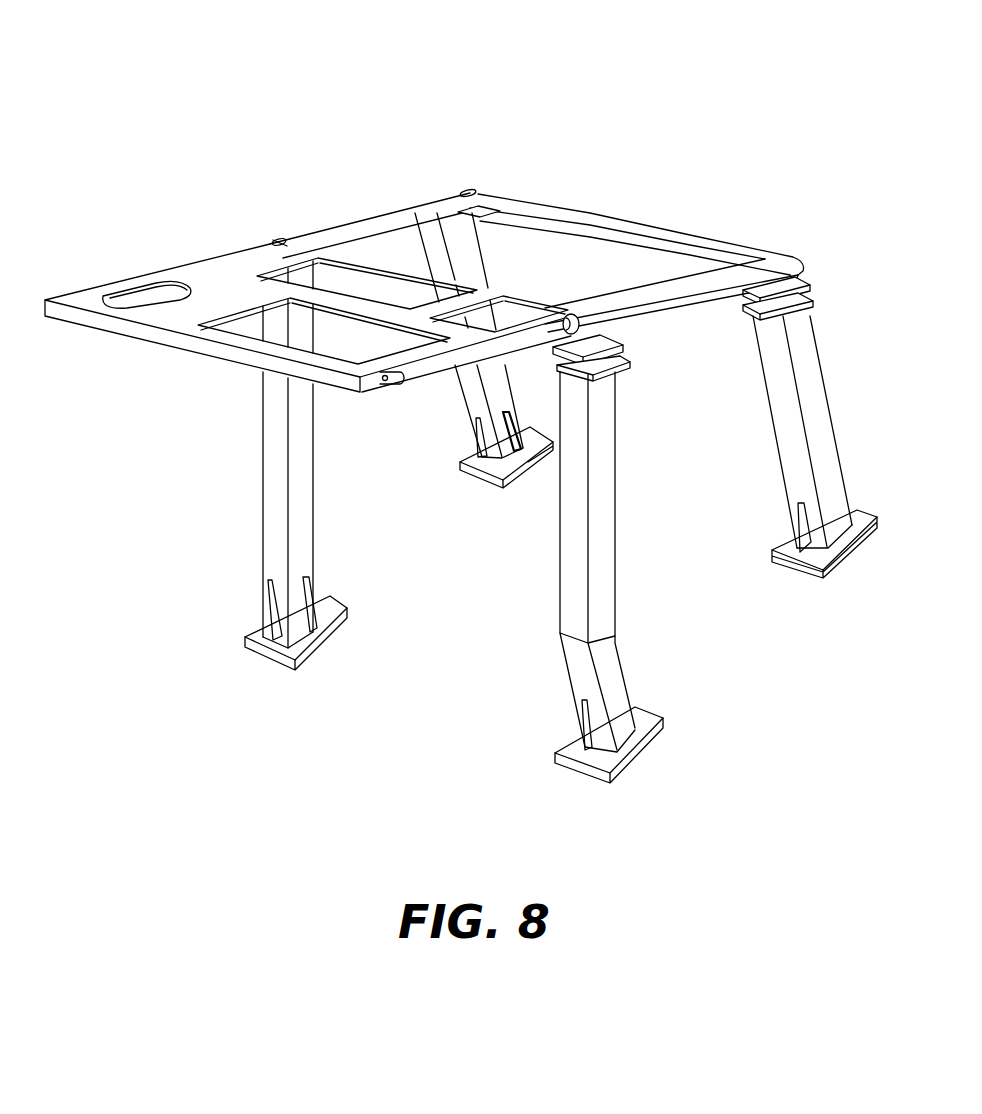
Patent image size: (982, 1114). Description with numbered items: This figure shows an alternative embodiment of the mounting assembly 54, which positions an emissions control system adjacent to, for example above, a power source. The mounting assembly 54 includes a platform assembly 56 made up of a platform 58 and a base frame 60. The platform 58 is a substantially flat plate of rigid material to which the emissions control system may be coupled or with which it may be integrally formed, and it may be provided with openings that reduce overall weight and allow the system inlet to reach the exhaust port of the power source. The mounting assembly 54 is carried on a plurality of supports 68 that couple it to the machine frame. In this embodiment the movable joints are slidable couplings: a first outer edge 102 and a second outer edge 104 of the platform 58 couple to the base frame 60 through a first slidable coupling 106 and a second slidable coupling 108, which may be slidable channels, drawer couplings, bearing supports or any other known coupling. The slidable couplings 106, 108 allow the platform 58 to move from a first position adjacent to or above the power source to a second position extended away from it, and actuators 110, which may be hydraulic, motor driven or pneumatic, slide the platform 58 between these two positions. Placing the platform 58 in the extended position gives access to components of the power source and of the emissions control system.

The mounting assembly 54 is at (248, 62).
The platform assembly 56 is at (312, 284).
The platform 58 is at (123, 286).
The base frame 60 is at (608, 213).
The supports 68 is at (465, 397).
The first outer edge 102 is at (428, 352).
The second outer edge 104 is at (173, 261).
The first slidable coupling 106 is at (533, 364).
The second slidable coupling 108 is at (285, 232).
The actuators 110 is at (470, 190).